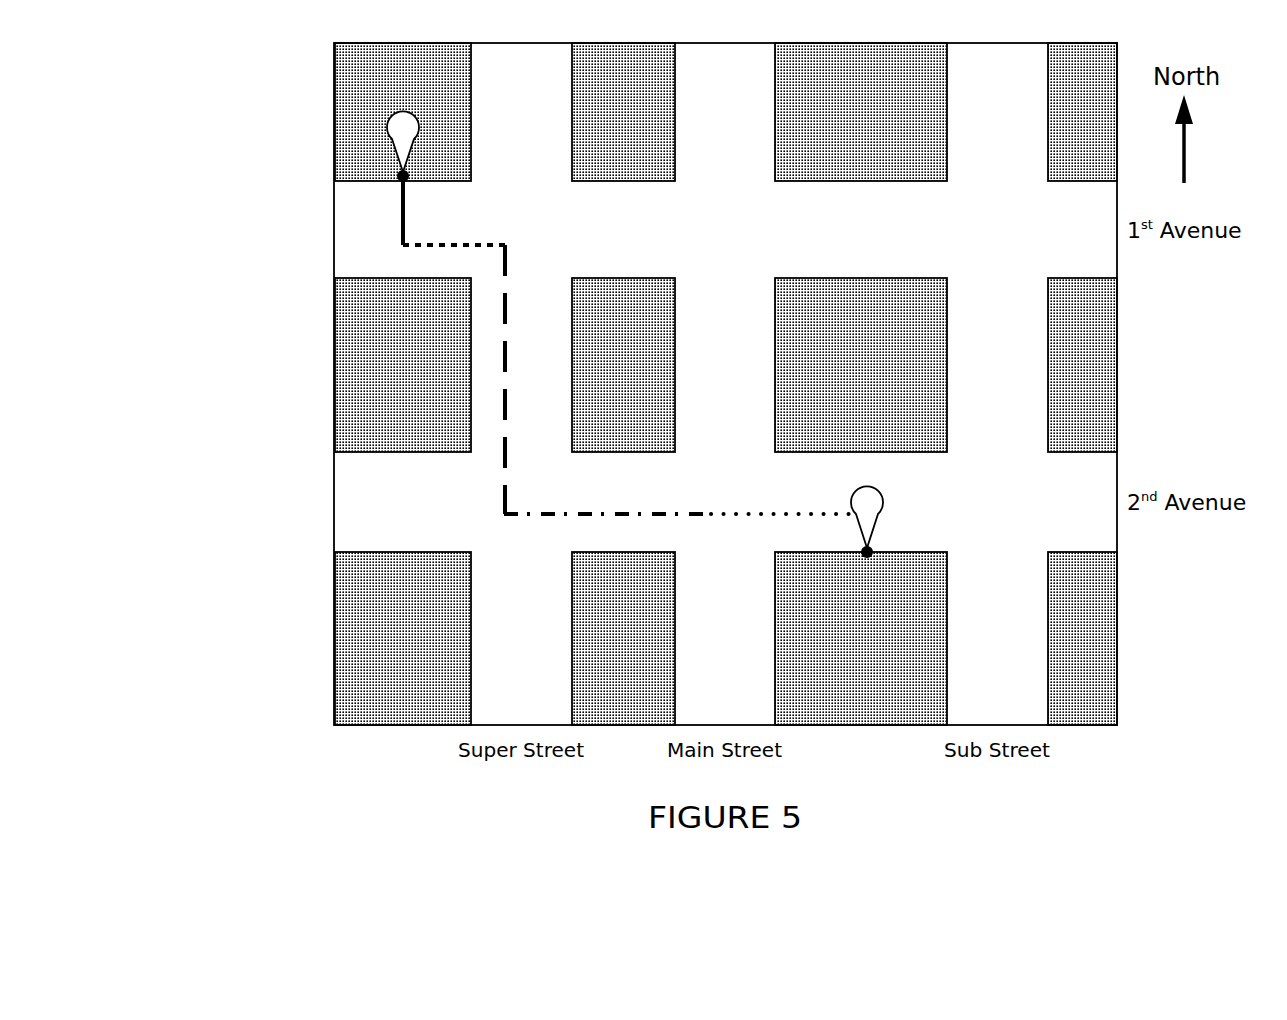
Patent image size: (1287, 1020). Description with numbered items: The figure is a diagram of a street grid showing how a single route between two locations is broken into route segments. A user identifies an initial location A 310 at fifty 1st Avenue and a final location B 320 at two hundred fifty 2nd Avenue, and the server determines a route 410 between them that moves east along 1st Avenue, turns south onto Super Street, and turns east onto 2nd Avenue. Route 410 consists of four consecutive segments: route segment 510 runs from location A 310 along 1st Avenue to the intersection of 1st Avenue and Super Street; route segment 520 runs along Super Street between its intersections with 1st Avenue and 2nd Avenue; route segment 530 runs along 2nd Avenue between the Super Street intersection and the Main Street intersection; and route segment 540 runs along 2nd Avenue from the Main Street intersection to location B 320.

The initial location A 310 is at (403, 176).
The final location B 320 is at (867, 552).
The route 410 is at (528, 365).
The route segment 510 is at (413, 247).
The route segment 520 is at (504, 483).
The route segment 530 is at (650, 514).
The route segment 540 is at (795, 514).